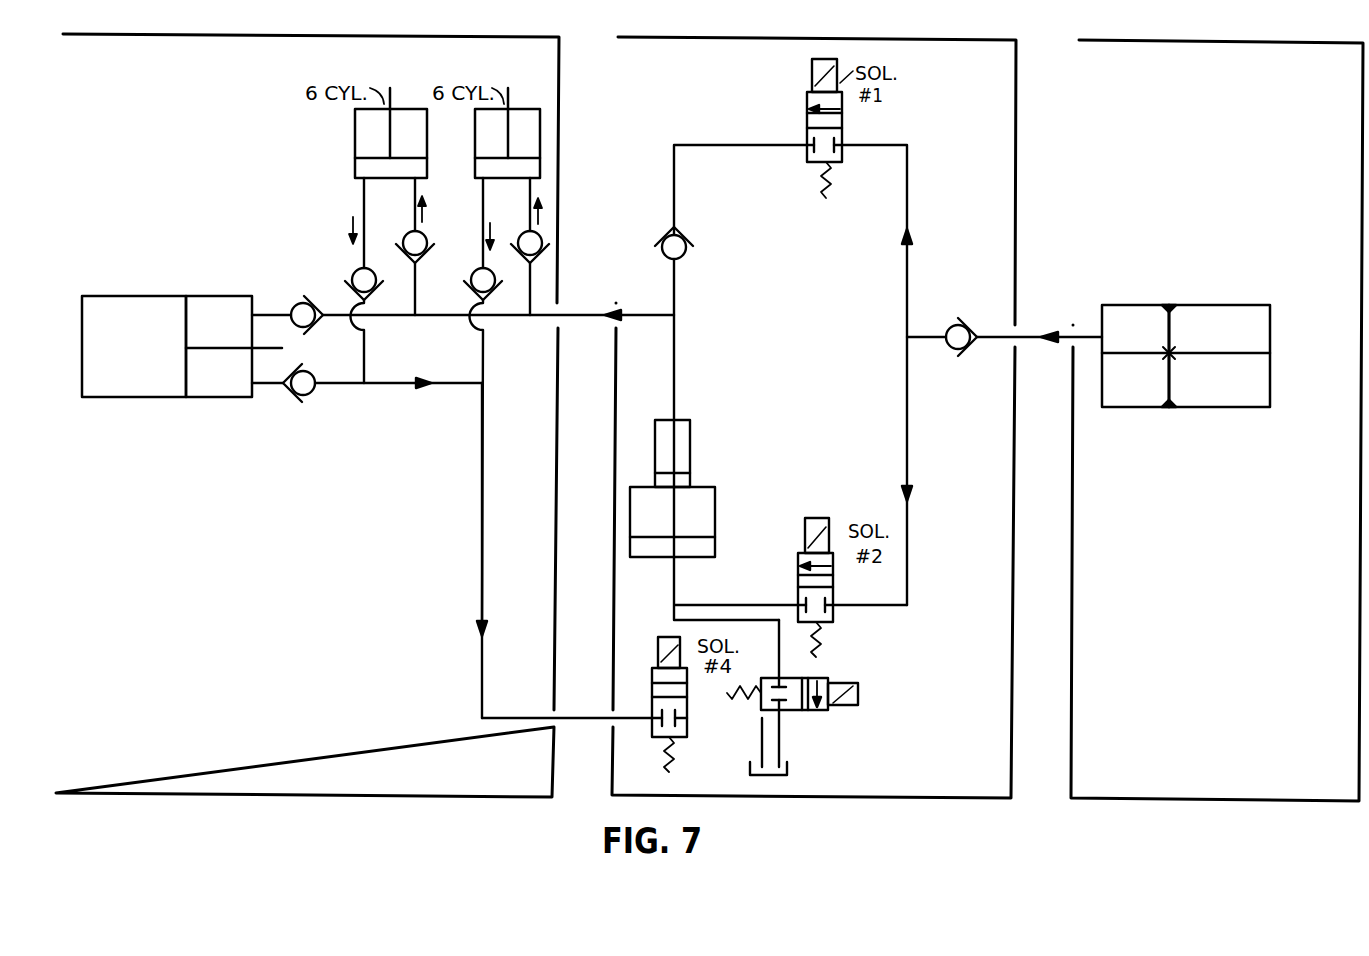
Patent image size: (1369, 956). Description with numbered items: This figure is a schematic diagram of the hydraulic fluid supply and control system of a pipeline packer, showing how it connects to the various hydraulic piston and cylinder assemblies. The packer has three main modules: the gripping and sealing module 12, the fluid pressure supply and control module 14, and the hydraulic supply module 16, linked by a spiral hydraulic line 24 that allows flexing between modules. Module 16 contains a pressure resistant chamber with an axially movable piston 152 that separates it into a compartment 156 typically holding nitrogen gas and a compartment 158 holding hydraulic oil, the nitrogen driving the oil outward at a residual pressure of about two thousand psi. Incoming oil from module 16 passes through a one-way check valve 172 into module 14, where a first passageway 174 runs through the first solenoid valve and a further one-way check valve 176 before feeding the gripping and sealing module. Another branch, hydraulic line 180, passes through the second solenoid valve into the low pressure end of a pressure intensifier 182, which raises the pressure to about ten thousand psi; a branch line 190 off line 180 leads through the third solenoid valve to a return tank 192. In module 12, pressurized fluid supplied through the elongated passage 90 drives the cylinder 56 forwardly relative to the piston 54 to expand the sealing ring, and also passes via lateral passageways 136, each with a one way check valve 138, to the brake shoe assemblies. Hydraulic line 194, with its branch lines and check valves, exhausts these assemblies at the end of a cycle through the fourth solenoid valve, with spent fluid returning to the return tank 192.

The gripping and sealing module 12 is at (216, 750).
The fluid pressure supply and control module 14 is at (964, 750).
The hydraulic fluid supply module 16 is at (1219, 750).
The hydraulic line 24 is at (1028, 330).
The piston 54 is at (164, 399).
The cylinder 56 is at (188, 366).
The elongated passage 90 is at (397, 318).
The lateral passageway 136 is at (421, 240).
The one way check valve 138 is at (537, 245).
The piston 152 is at (1173, 318).
The compartment 156 is at (1216, 395).
The compartment 158 is at (1125, 400).
The one-way check valve 172 is at (955, 351).
The first passageway 174 is at (909, 197).
The one-way check valve 176 is at (692, 253).
The hydraulic line 180 is at (711, 604).
The pressure intensifier 182 is at (717, 510).
The branch line 190 is at (780, 666).
The return tank 192 is at (790, 767).
The hydraulic line 194 is at (393, 386).